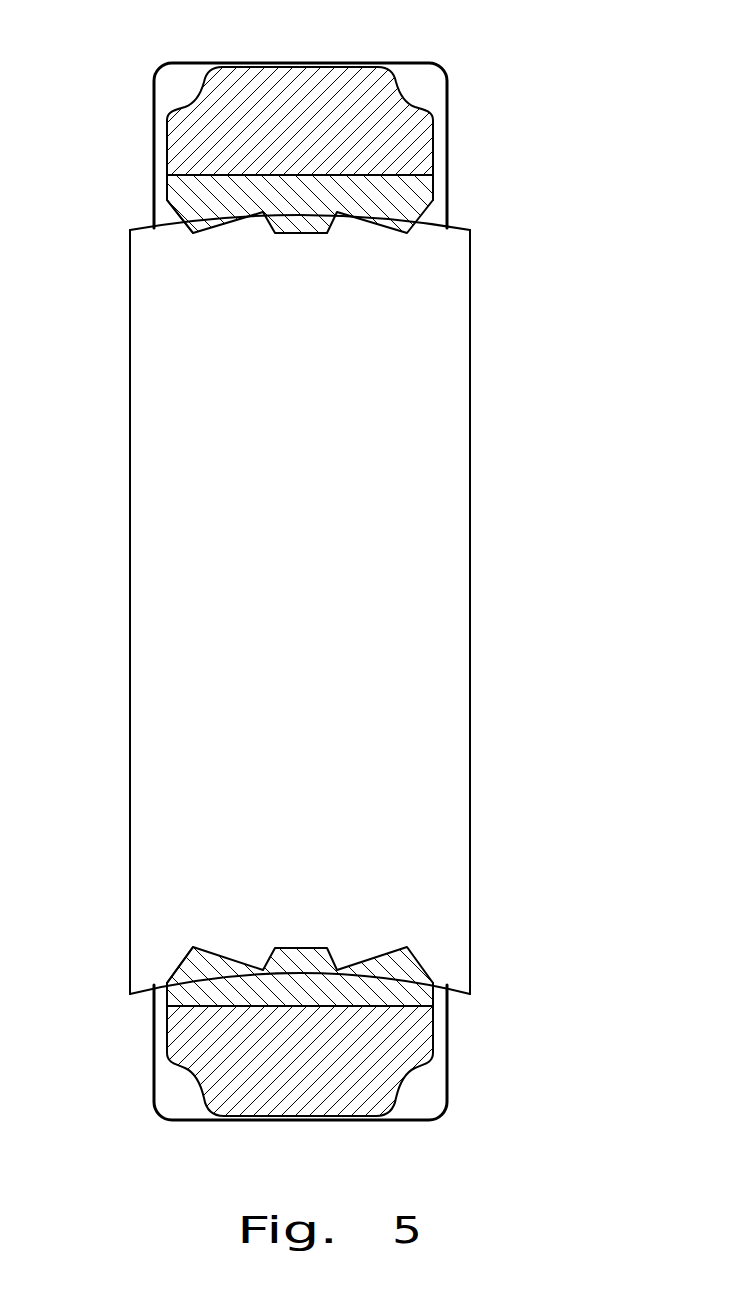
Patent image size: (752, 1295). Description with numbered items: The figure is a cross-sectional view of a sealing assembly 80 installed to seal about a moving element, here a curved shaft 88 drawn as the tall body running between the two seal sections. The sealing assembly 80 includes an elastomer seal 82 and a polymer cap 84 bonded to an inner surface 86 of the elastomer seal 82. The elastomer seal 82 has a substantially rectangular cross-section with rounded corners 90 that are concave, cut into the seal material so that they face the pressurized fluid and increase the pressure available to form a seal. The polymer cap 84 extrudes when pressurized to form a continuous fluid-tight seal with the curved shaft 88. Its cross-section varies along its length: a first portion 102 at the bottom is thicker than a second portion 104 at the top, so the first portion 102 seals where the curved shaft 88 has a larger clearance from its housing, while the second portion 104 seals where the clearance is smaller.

The sealing assembly 80 is at (533, 103).
The elastomer seal 82 is at (298, 88).
The polymer cap 84 is at (407, 200).
The inner surface 86 is at (222, 173).
The curved shaft 88 is at (323, 507).
The rounded corners 90 is at (202, 87).
The first portion 102 is at (190, 993).
The second portion 104 is at (205, 198).